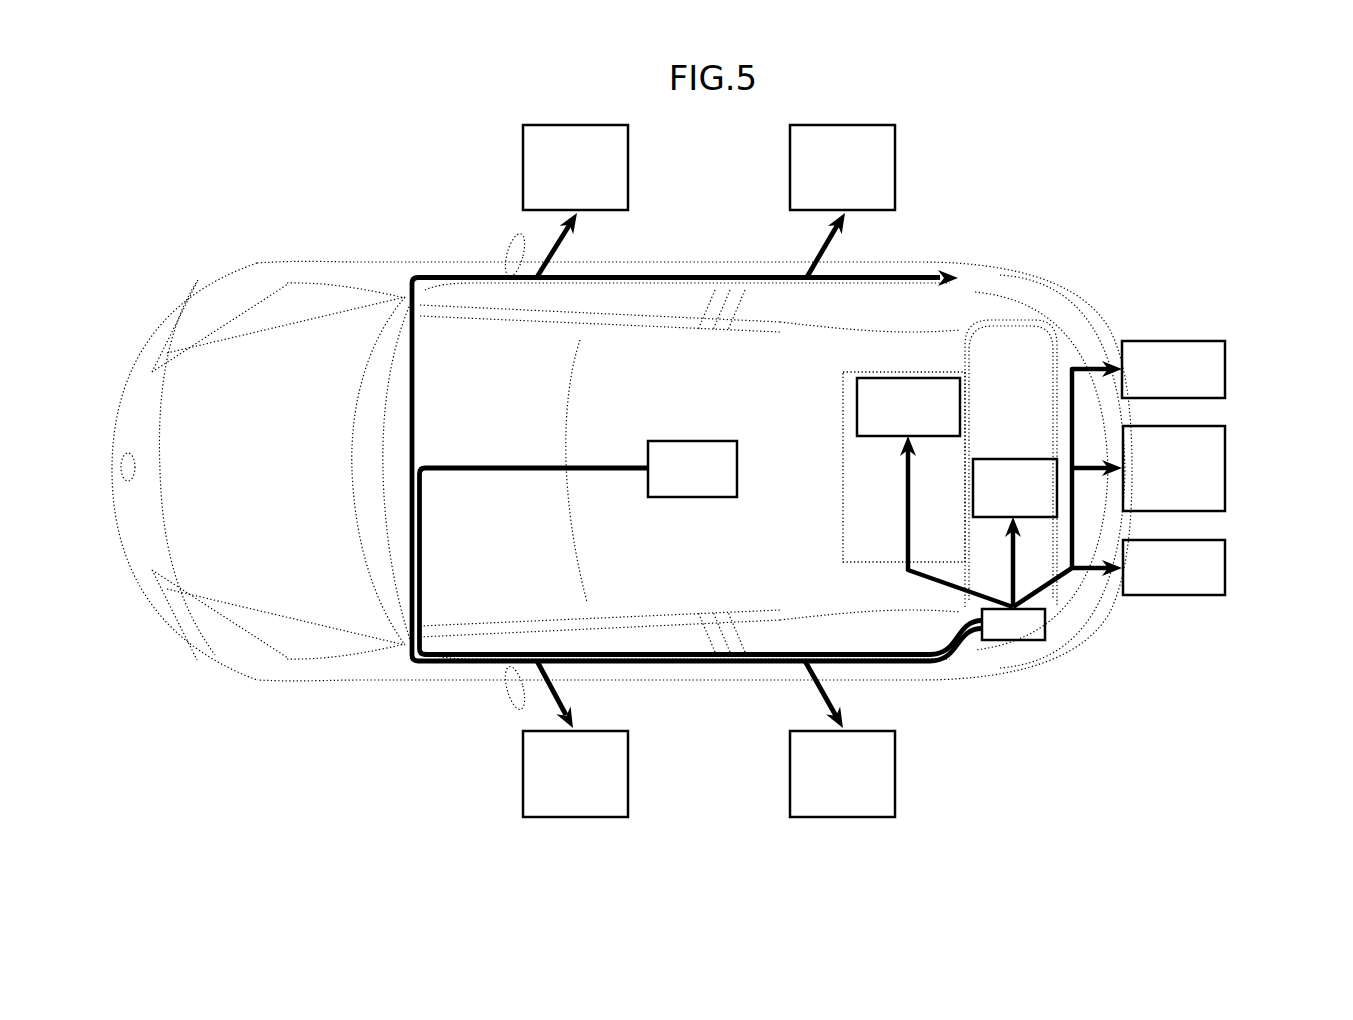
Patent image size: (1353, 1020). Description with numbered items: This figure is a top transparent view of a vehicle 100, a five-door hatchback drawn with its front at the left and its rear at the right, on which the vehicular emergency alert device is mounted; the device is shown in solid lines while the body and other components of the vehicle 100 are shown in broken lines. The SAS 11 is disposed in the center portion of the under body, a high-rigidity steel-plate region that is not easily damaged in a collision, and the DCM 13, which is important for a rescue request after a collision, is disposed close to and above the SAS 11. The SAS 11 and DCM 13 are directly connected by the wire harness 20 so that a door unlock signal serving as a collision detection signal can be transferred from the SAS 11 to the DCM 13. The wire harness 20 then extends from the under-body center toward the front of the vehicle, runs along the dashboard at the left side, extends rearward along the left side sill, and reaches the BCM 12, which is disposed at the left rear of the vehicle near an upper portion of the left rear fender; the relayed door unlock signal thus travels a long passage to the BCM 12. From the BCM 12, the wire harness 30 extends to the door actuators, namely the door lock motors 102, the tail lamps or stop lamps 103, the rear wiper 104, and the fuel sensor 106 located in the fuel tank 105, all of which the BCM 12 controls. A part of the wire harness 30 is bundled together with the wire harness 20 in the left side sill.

The vehicle 100 is at (1173, 232).
The wire harness 20 is at (641, 652).
The wire harness 30 is at (1070, 420).
The door actuator (door lock motor) 102 is at (628, 145).
The tail lamp (stop lamp) 103 is at (1225, 366).
The rear wiper 104 is at (1013, 459).
The fuel tank 105 is at (843, 512).
The fuel sensor 106 is at (857, 405).
The SAS 11 is at (692, 438).
The DCM 13 is at (693, 440).
The BCM 12 is at (1010, 640).